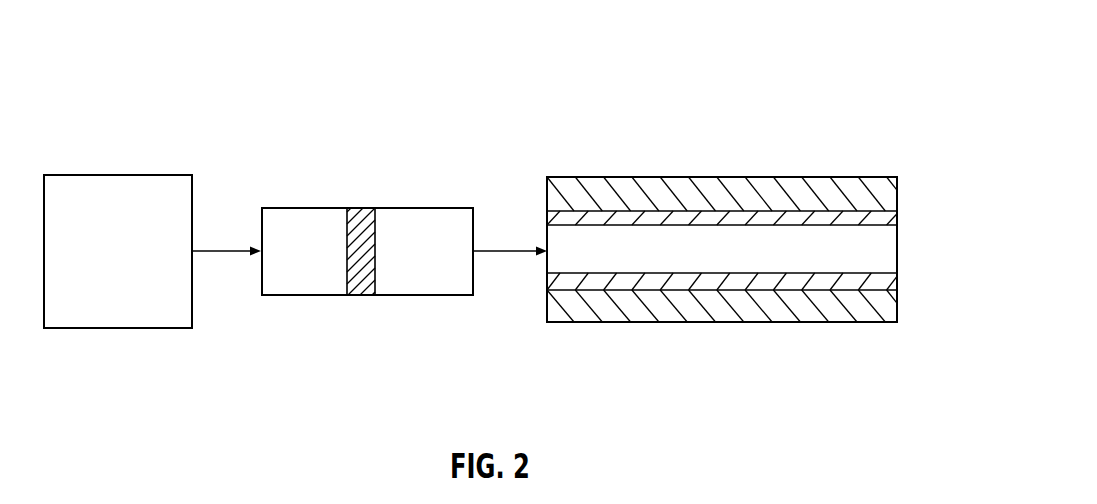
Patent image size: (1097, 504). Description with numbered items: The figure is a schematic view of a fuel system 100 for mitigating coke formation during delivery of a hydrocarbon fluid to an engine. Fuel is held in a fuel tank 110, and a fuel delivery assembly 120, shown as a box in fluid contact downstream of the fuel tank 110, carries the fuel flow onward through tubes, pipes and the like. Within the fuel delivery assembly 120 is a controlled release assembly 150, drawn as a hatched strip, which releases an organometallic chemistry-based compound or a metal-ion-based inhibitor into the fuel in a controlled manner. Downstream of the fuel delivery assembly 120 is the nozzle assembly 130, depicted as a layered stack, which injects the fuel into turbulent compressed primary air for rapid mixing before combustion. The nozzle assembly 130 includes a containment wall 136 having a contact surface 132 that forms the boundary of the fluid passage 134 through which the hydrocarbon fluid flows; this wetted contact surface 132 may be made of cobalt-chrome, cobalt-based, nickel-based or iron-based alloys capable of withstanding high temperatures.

The fuel system 100 is at (184, 46).
The fuel tank 110 is at (140, 266).
The fuel delivery assembly 120 is at (285, 204).
The controlled release assembly 150 is at (365, 204).
The nozzle assembly 130 is at (708, 154).
The containment wall 136 is at (874, 188).
The contact surface 132 is at (876, 220).
The fluid passage 134 is at (876, 257).